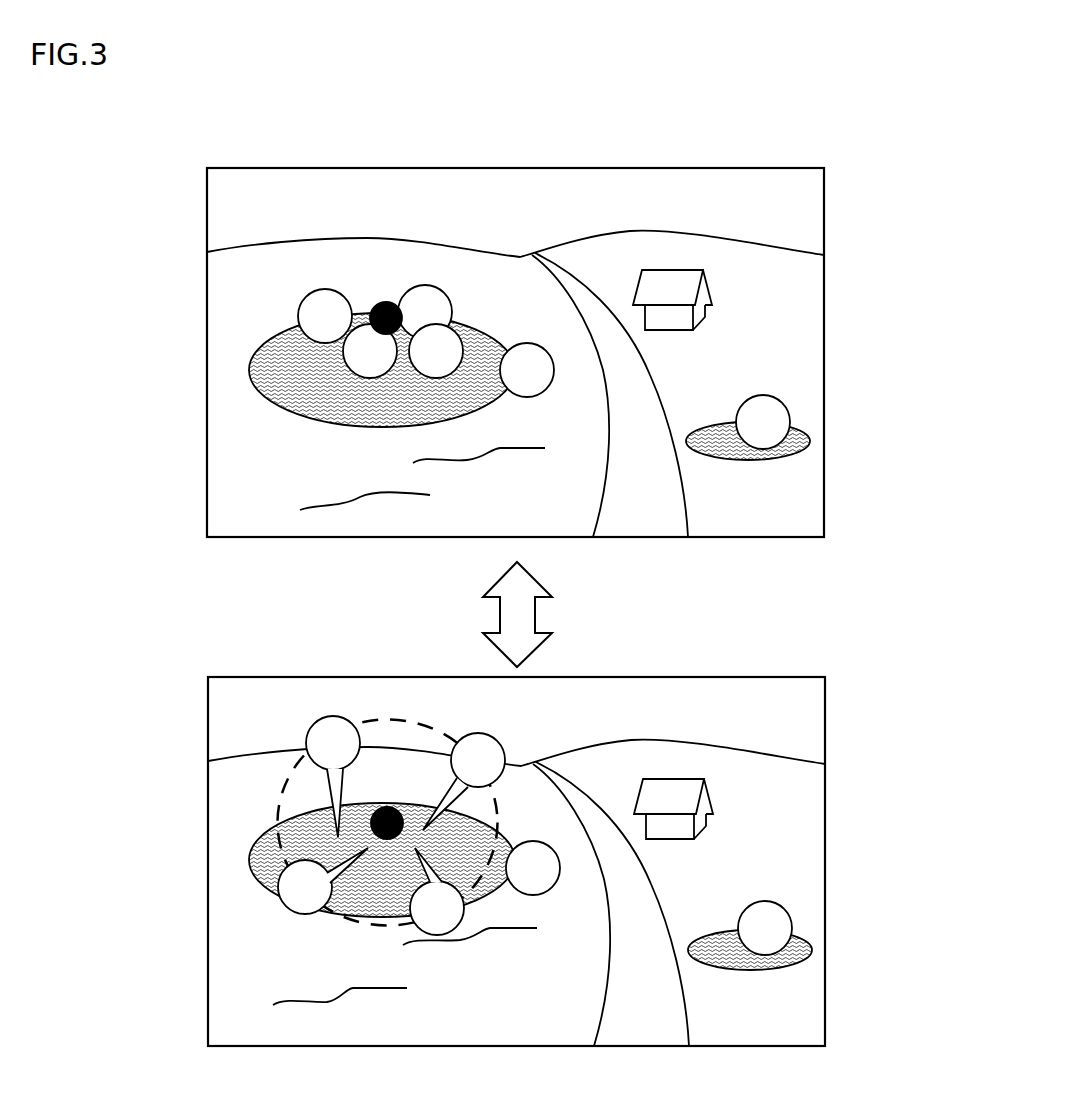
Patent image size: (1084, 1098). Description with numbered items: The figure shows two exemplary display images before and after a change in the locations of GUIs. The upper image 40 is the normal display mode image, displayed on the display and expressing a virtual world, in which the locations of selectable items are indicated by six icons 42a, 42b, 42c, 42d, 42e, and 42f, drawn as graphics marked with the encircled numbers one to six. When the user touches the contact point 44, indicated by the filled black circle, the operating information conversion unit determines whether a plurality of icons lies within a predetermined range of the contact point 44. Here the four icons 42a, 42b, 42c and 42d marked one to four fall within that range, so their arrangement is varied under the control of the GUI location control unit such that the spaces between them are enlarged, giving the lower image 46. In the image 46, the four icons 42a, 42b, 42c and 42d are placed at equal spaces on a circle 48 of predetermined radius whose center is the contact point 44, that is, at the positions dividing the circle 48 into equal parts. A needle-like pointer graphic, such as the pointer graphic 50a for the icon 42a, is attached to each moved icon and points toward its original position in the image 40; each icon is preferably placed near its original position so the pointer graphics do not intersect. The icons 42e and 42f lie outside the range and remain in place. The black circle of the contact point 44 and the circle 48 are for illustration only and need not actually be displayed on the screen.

The image 40 is at (825, 302).
The image 46 is at (825, 868).
The icon 42a is at (298, 313).
The icon 42b is at (413, 287).
The icon 42c is at (420, 375).
The icon 42d is at (345, 352).
The icon 42e is at (526, 343).
The icon 42f is at (790, 417).
The contact point 44 is at (376, 306).
The circle 48 is at (277, 793).
The pointer graphic 50a is at (330, 789).